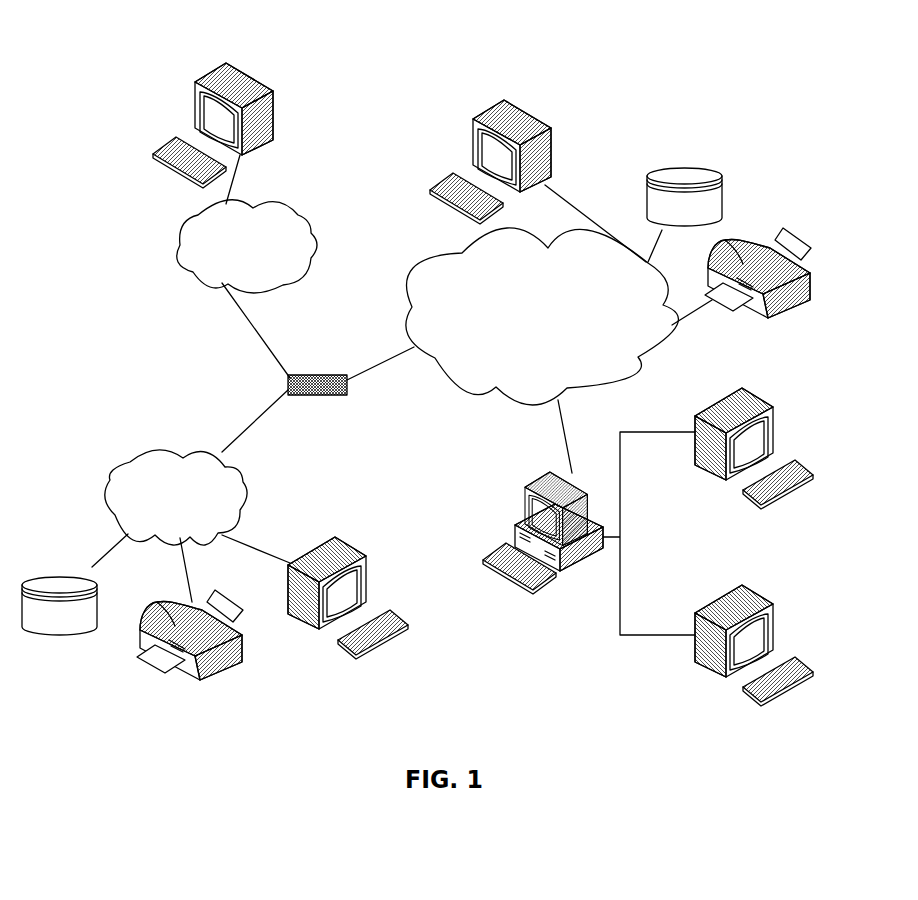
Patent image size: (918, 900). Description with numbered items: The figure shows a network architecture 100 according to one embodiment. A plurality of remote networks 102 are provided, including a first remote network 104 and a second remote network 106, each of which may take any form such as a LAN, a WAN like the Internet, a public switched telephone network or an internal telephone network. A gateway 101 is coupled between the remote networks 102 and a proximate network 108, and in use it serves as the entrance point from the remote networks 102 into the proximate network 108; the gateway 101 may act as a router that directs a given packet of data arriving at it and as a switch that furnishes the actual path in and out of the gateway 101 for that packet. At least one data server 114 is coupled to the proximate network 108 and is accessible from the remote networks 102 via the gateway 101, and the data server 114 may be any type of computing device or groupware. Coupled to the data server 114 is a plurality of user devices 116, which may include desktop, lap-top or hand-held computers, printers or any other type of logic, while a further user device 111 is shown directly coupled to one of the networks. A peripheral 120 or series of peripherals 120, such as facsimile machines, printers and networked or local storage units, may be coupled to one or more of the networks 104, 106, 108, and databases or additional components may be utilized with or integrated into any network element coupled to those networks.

The network architecture 100 is at (138, 48).
The gateway 101 is at (310, 375).
The remote networks 102 is at (162, 296).
The first remote network 104 is at (110, 472).
The second remote network 106 is at (311, 218).
The proximate network 108 is at (641, 377).
The user device 111 is at (550, 131).
The data server 114 is at (527, 493).
The user devices 116 is at (273, 97).
The peripheral 120 is at (62, 632).